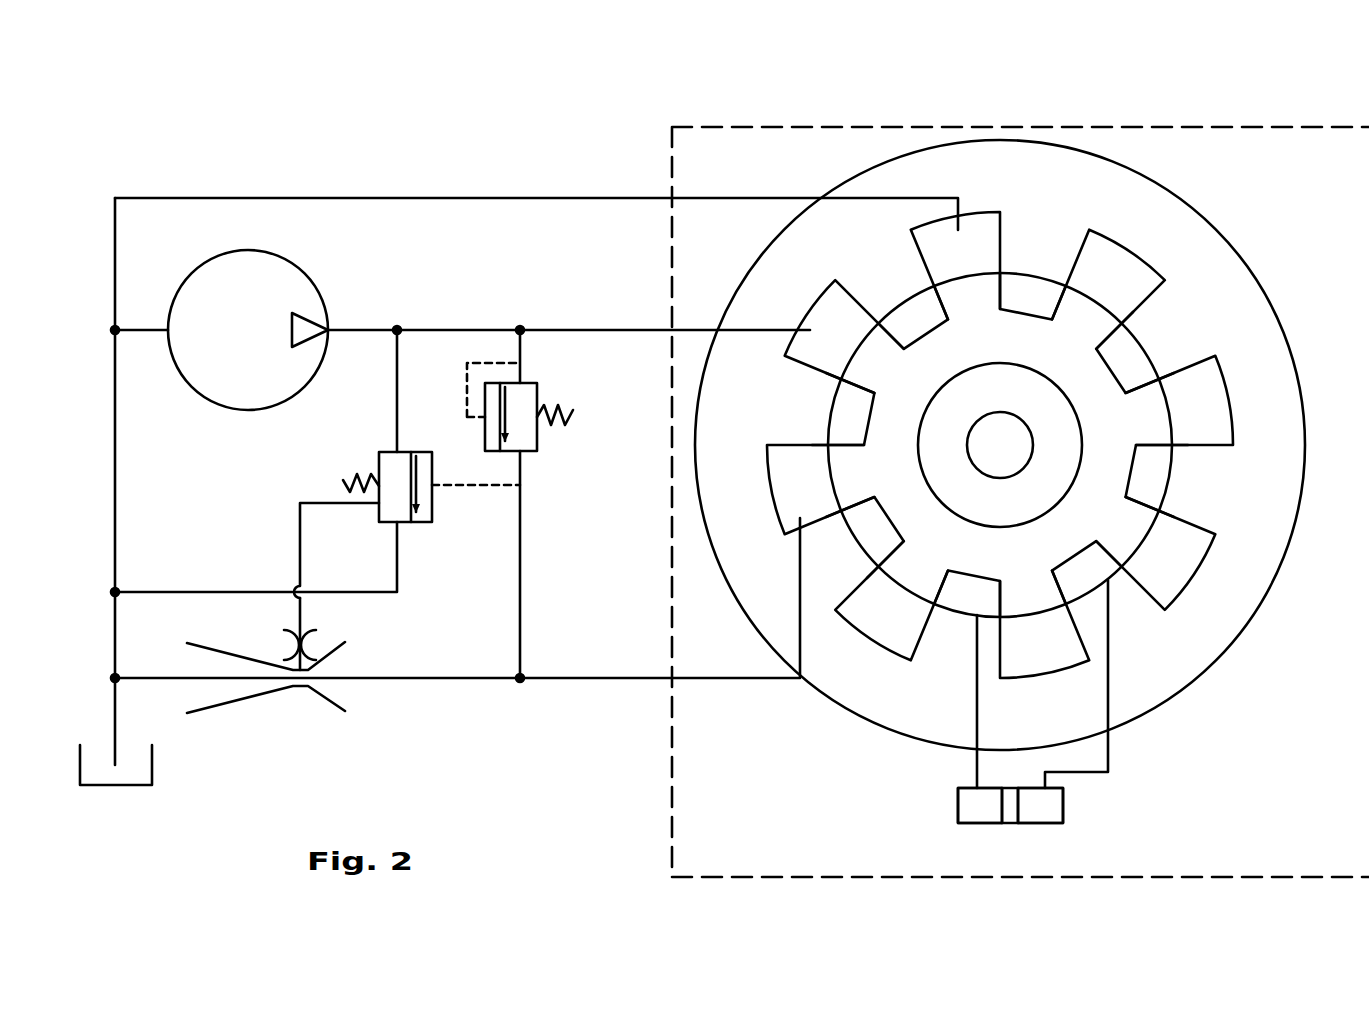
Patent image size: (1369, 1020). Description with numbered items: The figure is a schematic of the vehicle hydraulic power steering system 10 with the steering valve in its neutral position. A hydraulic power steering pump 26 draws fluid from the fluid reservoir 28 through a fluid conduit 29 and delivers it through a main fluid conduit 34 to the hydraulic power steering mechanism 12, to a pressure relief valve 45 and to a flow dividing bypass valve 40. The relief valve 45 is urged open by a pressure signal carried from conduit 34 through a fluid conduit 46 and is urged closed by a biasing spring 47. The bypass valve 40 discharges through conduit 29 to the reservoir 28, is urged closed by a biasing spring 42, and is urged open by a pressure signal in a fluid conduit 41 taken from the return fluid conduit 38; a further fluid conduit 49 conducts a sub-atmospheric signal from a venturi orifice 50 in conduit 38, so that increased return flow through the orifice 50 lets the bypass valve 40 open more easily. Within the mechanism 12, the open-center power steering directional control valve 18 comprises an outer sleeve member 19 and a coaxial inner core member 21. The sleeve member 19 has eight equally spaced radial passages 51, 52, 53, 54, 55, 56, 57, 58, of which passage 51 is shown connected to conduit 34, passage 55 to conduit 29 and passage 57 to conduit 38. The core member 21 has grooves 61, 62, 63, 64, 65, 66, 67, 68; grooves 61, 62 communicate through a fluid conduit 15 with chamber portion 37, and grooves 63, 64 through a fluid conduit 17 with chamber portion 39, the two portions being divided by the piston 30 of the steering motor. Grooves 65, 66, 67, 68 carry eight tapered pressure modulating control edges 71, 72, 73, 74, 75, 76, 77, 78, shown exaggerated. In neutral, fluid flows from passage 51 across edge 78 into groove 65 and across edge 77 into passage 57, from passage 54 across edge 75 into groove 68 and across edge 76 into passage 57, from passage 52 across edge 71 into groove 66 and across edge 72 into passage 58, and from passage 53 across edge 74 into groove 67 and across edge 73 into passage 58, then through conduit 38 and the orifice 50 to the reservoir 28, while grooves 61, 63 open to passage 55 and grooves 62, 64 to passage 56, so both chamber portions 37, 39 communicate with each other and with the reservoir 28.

The vehicle hydraulic power steering system 10 is at (518, 186).
The hydraulic power steering mechanism 12 is at (905, 125).
The fluid conduit 15 is at (977, 690).
The fluid conduit 17 is at (1108, 748).
The power steering directional control valve 18 is at (1266, 666).
The outer sleeve member 19 is at (1248, 628).
The inner core member 21 is at (987, 308).
The hydraulic power steering pump 26 is at (268, 270).
The fluid reservoir 28 is at (123, 772).
The fluid conduit 29 is at (114, 458).
The piston 30 is at (1010, 810).
The main fluid conduit 34 is at (437, 330).
The chamber portion 37 is at (958, 806).
The return fluid conduit 38 is at (620, 680).
The chamber portion 39 is at (1063, 805).
The flow dividing bypass valve 40 is at (432, 503).
The fluid conduit 41 is at (470, 480).
The biasing spring 42 is at (356, 475).
The pressure relief valve 45 is at (527, 390).
The fluid conduit 46 is at (467, 383).
The biasing spring 47 is at (573, 413).
The fluid conduit 49 is at (300, 545).
The orifice 50 is at (290, 690).
The passage 51 is at (828, 305).
The passage 52 is at (1120, 252).
The passage 53 is at (1183, 560).
The passage 54 is at (880, 628).
The passage 55 is at (975, 222).
The passage 56 is at (1075, 643).
The fluid passage 57 is at (785, 510).
The fluid passage 58 is at (1222, 392).
The groove 61 is at (1035, 302).
The groove 62 is at (967, 580).
The groove 63 is at (920, 318).
The groove 64 is at (1085, 565).
The groove 65 is at (862, 410).
The groove 66 is at (1120, 363).
The groove 67 is at (1140, 463).
The groove 68 is at (880, 515).
The tapered pressure modulating control edge 71 is at (1127, 320).
The tapered pressure modulating control edge 72 is at (1160, 373).
The tapered pressure modulating control edge 73 is at (1173, 447).
The tapered pressure modulating control edge 74 is at (1160, 511).
The tapered pressure modulating control edge 75 is at (878, 570).
The tapered pressure modulating control edge 76 is at (840, 520).
The tapered pressure modulating control edge 77 is at (825, 445).
The tapered pressure modulating control edge 78 is at (841, 379).